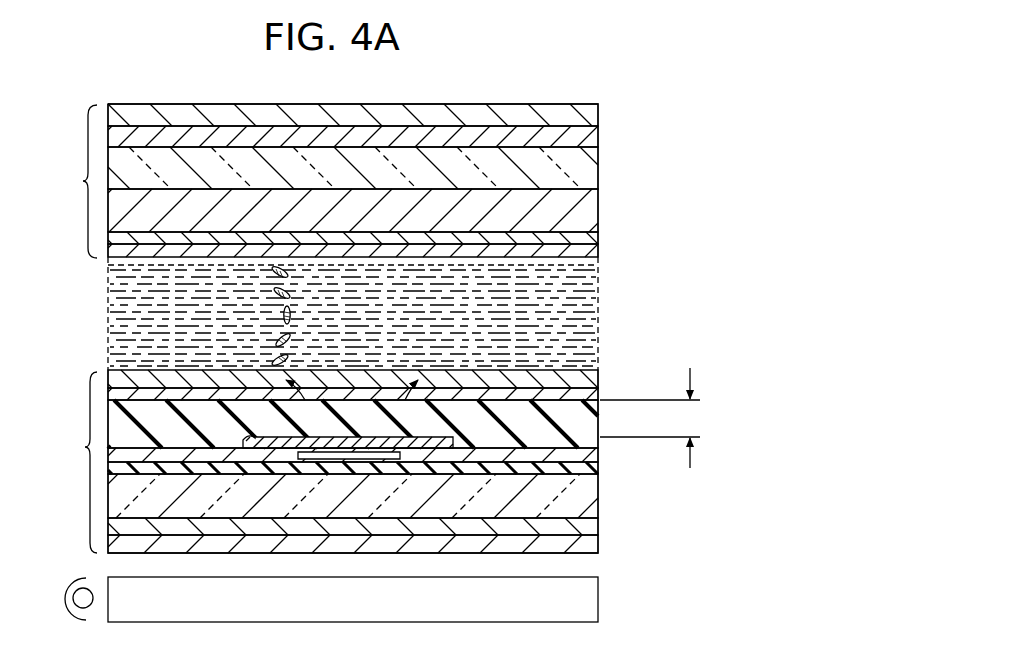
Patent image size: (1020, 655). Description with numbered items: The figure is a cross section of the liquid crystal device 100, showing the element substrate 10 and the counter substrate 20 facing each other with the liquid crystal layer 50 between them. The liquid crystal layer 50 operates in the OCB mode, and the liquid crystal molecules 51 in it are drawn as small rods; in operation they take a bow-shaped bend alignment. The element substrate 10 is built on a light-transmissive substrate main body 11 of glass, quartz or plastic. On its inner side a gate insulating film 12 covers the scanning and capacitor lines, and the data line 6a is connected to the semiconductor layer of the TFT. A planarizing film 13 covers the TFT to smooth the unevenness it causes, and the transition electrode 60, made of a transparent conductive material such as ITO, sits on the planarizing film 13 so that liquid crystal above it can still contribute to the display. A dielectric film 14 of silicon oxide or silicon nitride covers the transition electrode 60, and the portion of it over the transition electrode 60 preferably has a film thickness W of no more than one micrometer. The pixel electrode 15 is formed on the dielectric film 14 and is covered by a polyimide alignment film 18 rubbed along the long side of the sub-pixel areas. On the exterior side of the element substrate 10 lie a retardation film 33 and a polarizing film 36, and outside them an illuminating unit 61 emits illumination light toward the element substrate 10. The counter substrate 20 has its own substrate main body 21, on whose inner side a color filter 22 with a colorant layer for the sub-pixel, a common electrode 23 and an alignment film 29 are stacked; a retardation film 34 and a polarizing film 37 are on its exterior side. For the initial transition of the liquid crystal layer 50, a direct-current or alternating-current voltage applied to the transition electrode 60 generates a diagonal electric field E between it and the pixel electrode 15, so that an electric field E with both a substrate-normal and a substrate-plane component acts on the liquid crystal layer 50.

The liquid crystal device 100 is at (587, 88).
The counter substrate 20 is at (75, 181).
The element substrate 10 is at (76, 462).
The polarizing film 37 is at (598, 113).
The retardation film 34 is at (594, 140).
The substrate main body 21 is at (592, 172).
The color filter 22 is at (594, 206).
The common electrode 23 is at (596, 239).
The alignment film 29 is at (596, 251).
The liquid crystal layer 50 is at (596, 303).
The liquid crystal molecules 51 is at (278, 312).
The alignment film 18 is at (596, 378).
The pixel electrode 15 is at (596, 395).
The dielectric film 14 is at (596, 421).
The transition electrode 60 is at (250, 438).
The planarizing film 13 is at (596, 456).
The data line 6a is at (357, 452).
The gate insulating film 12 is at (596, 468).
The substrate main body 11 is at (596, 496).
The retardation film 33 is at (596, 527).
The polarizing film 36 is at (596, 545).
The illuminating unit 61 is at (596, 599).
The electric field E is at (310, 432).
The film thickness W is at (660, 418).